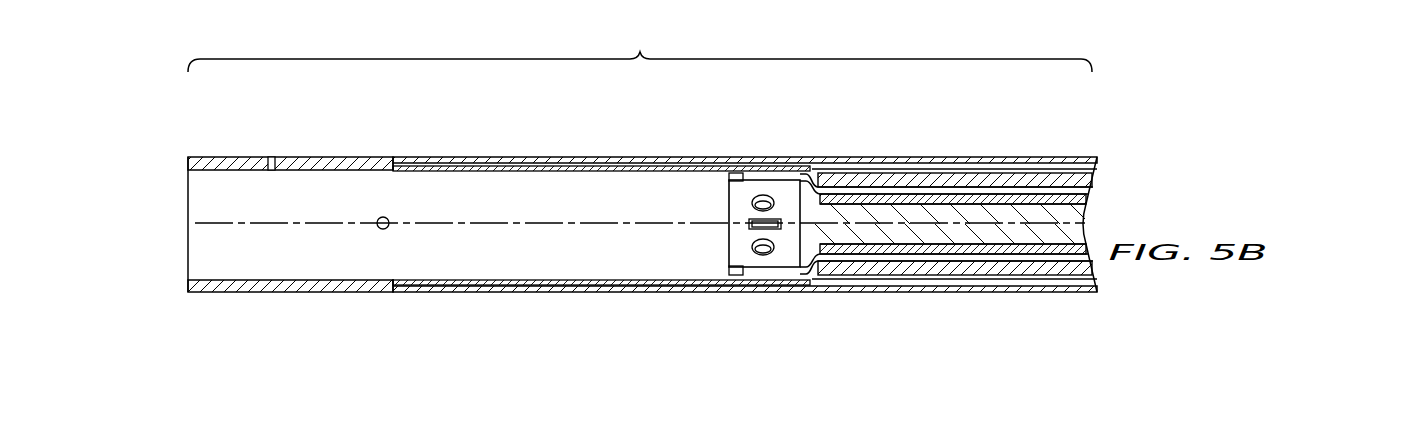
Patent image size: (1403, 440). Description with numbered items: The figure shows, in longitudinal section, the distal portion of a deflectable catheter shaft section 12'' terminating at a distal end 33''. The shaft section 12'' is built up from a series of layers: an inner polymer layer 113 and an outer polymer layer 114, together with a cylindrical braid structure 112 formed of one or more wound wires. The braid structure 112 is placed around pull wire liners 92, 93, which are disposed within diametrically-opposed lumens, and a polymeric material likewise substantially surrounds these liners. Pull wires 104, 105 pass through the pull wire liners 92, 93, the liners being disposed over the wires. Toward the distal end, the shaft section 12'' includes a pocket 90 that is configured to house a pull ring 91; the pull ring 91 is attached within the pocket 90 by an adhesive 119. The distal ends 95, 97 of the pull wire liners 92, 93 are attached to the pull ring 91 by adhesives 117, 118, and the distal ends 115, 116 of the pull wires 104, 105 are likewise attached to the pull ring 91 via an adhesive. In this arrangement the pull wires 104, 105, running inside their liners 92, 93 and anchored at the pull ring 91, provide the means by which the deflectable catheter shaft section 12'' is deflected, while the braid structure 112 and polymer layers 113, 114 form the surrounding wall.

The deflectable catheter shaft section 12'' is at (640, 46).
The distal end 33'' is at (160, 247).
The pocket 90 is at (240, 200).
The inner polymer layer 113 is at (412, 183).
The cylindrical braid structure 112 is at (455, 286).
The outer polymer layer 114 is at (508, 157).
The pull ring 91 is at (729, 200).
The distal end of pull wire 116 is at (729, 177).
The distal end of pull wire 115 is at (728, 270).
The adhesive 118 is at (812, 186).
The adhesive 117 is at (808, 275).
The pull wire 105 is at (1053, 190).
The pull wire liner 93 is at (1012, 205).
The pull wire 104 is at (1040, 258).
The distal end of pull wire liner 97 is at (843, 200).
The distal end of pull wire liner 95 is at (838, 258).
The pull wire liner 92 is at (960, 252).
The adhesive 119 is at (748, 228).